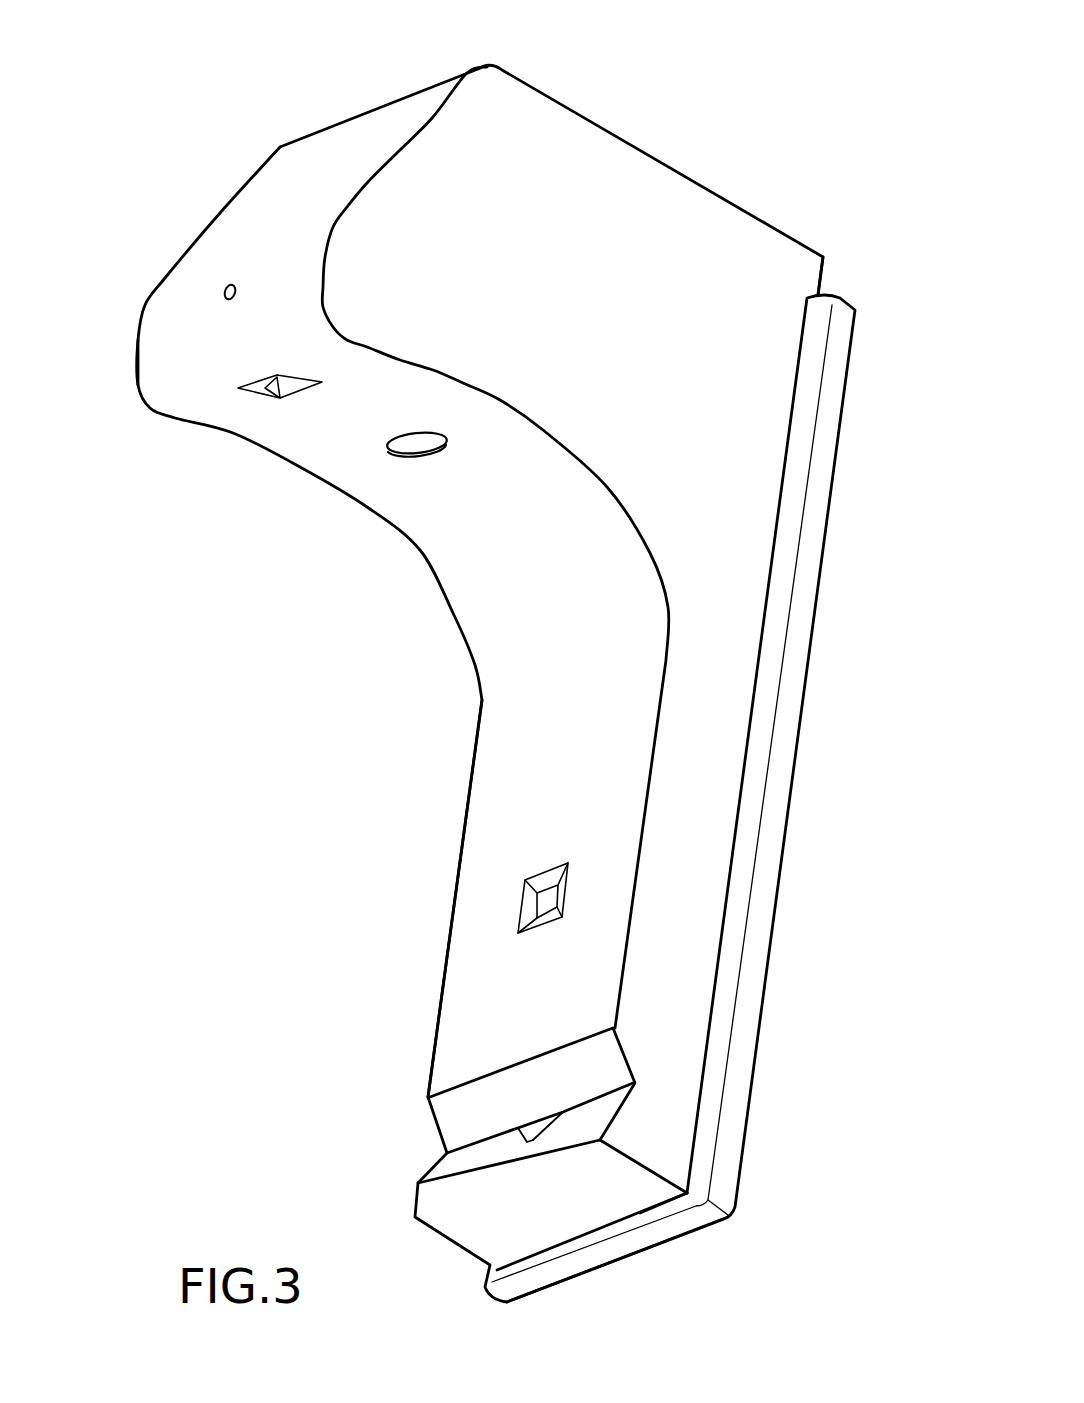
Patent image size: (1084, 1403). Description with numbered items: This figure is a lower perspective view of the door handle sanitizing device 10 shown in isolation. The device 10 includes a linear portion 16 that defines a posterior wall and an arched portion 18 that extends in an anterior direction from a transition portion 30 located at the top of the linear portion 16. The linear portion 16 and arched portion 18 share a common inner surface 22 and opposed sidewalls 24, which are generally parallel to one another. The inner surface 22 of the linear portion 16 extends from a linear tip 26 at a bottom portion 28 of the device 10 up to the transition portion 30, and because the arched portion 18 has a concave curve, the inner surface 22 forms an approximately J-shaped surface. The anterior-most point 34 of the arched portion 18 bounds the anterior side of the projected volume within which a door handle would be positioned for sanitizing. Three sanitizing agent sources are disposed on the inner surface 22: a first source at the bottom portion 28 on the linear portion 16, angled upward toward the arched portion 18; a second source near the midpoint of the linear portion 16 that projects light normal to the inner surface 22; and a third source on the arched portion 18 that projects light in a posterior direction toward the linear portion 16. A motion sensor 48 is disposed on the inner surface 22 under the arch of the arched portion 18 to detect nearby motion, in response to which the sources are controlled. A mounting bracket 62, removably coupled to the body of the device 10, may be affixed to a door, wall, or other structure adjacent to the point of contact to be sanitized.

The door handle sanitizing device 10 is at (664, 110).
The linear portion 16 is at (445, 796).
The arched portion 18 is at (290, 493).
The inner surface 22 is at (582, 697).
The sidewalls 24 is at (702, 404).
The linear tip 26 is at (413, 1216).
The bottom portion 28 is at (776, 1115).
The transition portion 30 is at (456, 707).
The anterior-most point 34 is at (158, 368).
The motion sensor 48 is at (422, 439).
The mounting bracket 62 is at (782, 770).